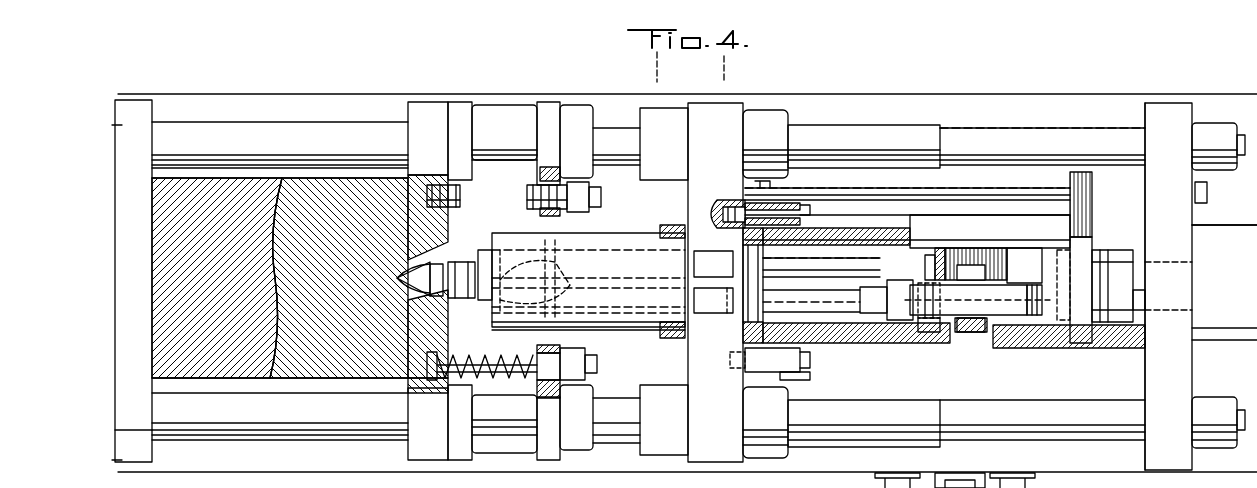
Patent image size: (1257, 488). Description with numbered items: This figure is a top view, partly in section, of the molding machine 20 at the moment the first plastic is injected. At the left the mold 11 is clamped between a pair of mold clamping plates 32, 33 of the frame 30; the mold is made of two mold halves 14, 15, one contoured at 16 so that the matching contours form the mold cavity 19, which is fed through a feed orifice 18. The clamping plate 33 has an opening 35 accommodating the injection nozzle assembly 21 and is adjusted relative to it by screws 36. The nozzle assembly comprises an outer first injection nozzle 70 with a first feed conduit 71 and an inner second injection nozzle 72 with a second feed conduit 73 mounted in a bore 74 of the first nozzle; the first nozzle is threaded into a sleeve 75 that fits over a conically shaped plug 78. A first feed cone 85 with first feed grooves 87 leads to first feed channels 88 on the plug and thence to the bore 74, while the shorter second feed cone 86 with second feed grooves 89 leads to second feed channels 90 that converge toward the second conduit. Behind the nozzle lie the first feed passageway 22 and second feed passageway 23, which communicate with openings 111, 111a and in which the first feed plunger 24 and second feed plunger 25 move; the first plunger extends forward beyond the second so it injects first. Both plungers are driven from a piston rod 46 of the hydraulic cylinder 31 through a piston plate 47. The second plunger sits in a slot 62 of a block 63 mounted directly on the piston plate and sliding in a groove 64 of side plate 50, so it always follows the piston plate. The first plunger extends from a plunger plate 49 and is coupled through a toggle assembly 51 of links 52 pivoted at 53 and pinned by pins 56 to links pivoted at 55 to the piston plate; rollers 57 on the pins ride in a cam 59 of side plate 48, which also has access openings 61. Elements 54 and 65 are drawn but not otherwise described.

The mold 11 is at (314, 178).
The mold half 14 is at (332, 190).
The mold half 15 is at (205, 198).
The contour 16 is at (567, 250).
The feed orifice 18 is at (335, 249).
The mold cavity 19 is at (272, 220).
The molding machine 20 is at (1136, 70).
The injection nozzle assembly 21 is at (489, 240).
The first feed passageway 22 is at (650, 330).
The second feed passageway 23 is at (612, 255).
The first feed plunger 24 is at (830, 308).
The second feed plunger 25 is at (818, 250).
The frame 30 is at (815, 113).
The hydraulic cylinder 31 is at (1230, 237).
The mold clamping plate 32 is at (137, 143).
The mold clamping plate 33 is at (423, 110).
The opening 35 is at (410, 332).
The screws 36 is at (516, 385).
The piston rod 46 is at (1138, 262).
The piston plate 47 is at (1075, 219).
The side plate 48 is at (896, 345).
The plunger plate 49 is at (882, 325).
The side plate 50 is at (885, 240).
The toggle assembly 51 is at (993, 285).
The links 52 is at (947, 284).
The links 53 is at (900, 300).
The bearing 54 is at (1000, 292).
The pivot end 55 is at (981, 300).
The pins 56 is at (1002, 338).
The rollers 57 is at (972, 270).
The cam 59 is at (893, 320).
The openings 61 is at (858, 345).
The slot 62 is at (932, 250).
The block 63 is at (965, 258).
The groove 64 is at (845, 250).
The retaining ring 65 is at (966, 340).
The first injection nozzle 70 is at (412, 256).
The first feed conduit 71 is at (410, 270).
The second injection nozzle 72 is at (467, 258).
The second feed conduit 73 is at (458, 310).
The bore 74 is at (405, 300).
The sleeve 75 is at (470, 306).
The plug 78 is at (516, 322).
The first feed cone 85 is at (620, 322).
The second feed cone 86 is at (586, 252).
The first feed grooves 87 is at (595, 322).
The first feed channels 88 is at (536, 322).
The second feed grooves 89 is at (517, 255).
The second feed channels 90 is at (535, 281).
The opening 111 is at (714, 312).
The opening 111a is at (728, 244).